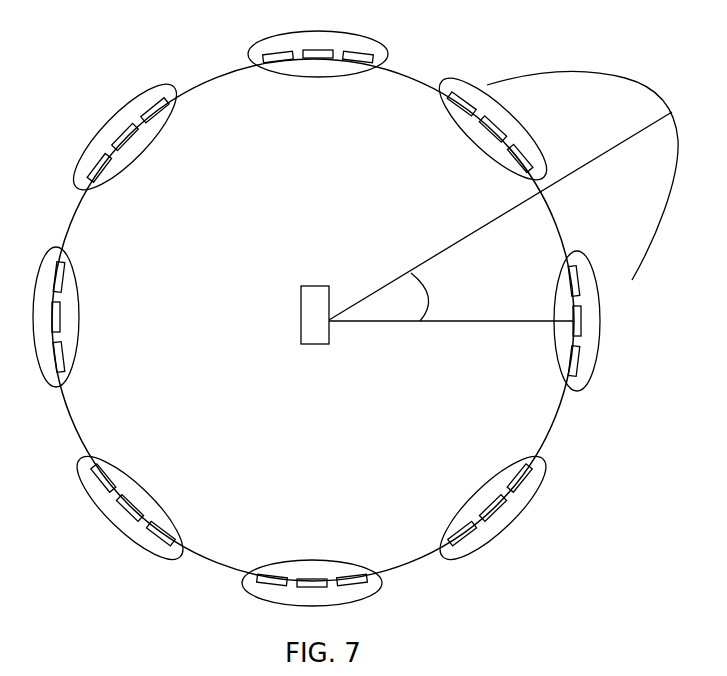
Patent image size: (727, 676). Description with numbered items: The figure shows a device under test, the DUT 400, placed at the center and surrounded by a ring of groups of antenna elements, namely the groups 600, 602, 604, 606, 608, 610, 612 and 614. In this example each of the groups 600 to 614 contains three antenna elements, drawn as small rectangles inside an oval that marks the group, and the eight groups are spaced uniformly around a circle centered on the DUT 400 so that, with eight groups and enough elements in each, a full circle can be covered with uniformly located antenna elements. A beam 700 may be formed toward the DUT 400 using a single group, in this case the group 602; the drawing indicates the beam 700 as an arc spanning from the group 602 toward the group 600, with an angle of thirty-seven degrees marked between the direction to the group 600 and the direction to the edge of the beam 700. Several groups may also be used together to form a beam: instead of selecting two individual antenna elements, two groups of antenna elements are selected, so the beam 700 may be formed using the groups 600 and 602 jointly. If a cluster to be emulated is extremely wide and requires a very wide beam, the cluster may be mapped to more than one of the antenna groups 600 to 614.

The DUT 400 is at (310, 286).
The group of antenna elements 600 is at (575, 253).
The group of antenna elements 602 is at (440, 105).
The group of antenna elements 604 is at (272, 78).
The group of antenna elements 606 is at (122, 168).
The group of antenna elements 608 is at (80, 337).
The group of antenna elements 610 is at (183, 557).
The group of antenna elements 612 is at (270, 565).
The group of antenna elements 614 is at (540, 460).
The beam 700 is at (620, 73).